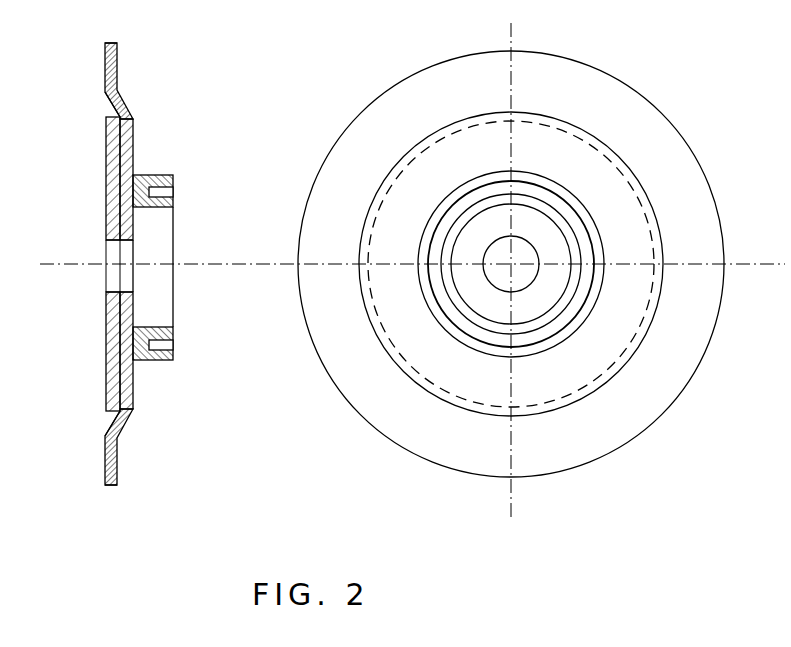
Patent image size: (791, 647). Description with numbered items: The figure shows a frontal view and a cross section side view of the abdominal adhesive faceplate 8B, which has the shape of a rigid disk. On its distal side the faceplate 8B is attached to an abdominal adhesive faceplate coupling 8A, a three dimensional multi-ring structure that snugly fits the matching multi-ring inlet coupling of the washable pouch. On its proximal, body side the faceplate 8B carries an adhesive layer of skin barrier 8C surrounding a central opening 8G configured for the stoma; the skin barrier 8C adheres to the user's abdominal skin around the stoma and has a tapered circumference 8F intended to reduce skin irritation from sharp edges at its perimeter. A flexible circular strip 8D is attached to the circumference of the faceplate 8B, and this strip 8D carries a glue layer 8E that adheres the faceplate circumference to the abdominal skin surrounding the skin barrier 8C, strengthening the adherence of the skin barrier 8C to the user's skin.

The abdominal adhesive faceplate coupling 8A is at (150, 173).
The abdominal adhesive faceplate 8B is at (128, 143).
The adhesive layer of skin barrier 8C is at (110, 147).
The flexible circular strip 8D is at (118, 62).
The glue layer 8E is at (105, 65).
The tapered circumference 8F is at (106, 112).
The central opening 8G is at (110, 250).